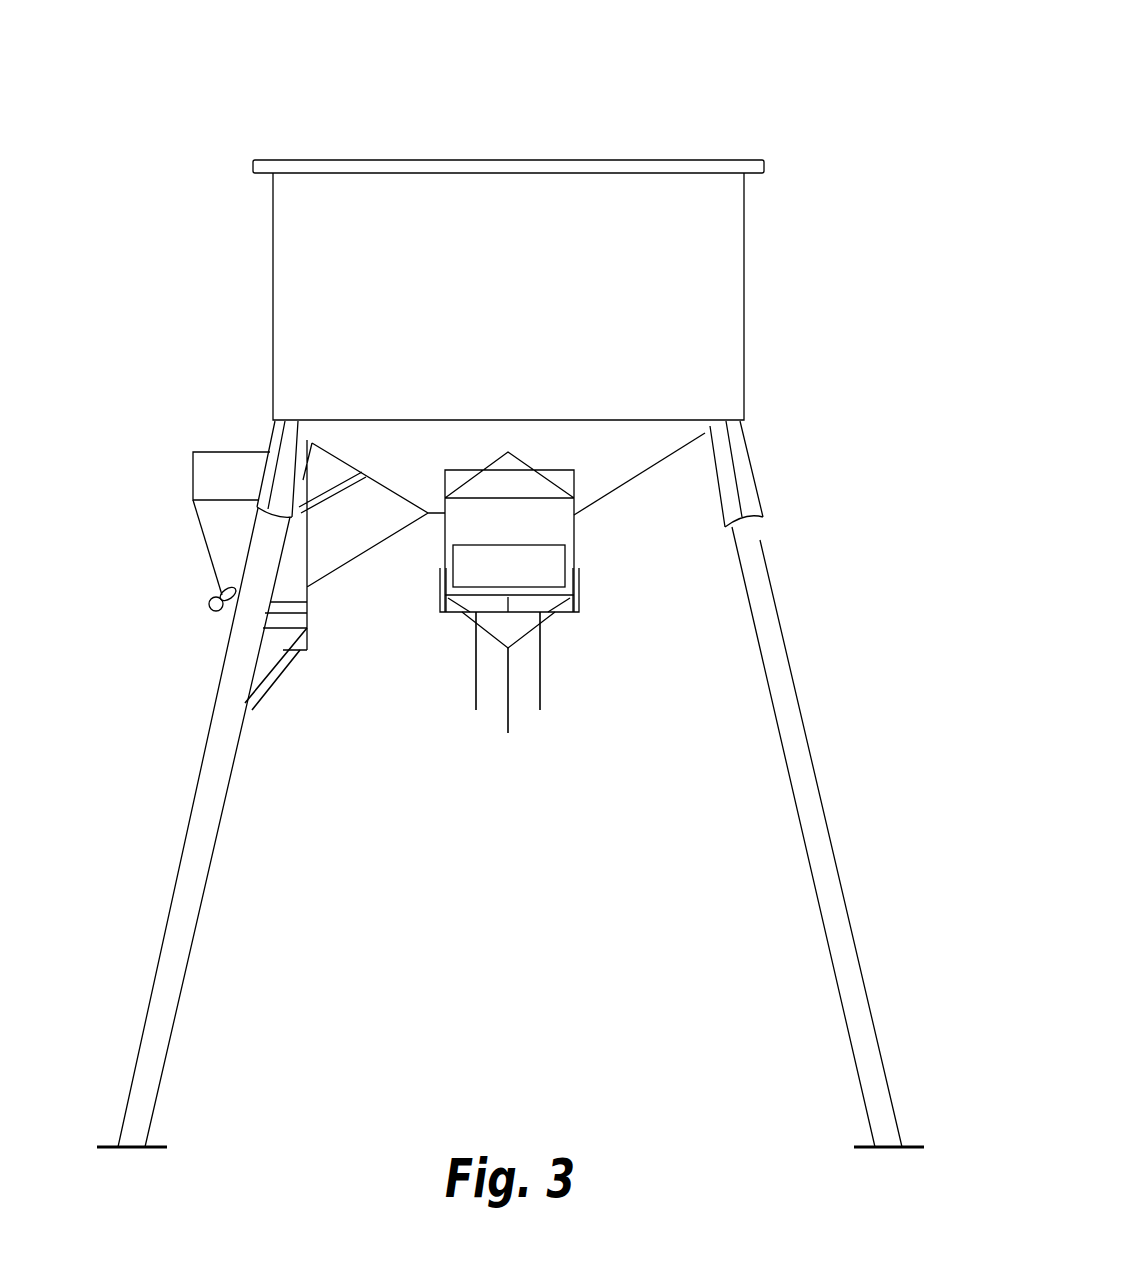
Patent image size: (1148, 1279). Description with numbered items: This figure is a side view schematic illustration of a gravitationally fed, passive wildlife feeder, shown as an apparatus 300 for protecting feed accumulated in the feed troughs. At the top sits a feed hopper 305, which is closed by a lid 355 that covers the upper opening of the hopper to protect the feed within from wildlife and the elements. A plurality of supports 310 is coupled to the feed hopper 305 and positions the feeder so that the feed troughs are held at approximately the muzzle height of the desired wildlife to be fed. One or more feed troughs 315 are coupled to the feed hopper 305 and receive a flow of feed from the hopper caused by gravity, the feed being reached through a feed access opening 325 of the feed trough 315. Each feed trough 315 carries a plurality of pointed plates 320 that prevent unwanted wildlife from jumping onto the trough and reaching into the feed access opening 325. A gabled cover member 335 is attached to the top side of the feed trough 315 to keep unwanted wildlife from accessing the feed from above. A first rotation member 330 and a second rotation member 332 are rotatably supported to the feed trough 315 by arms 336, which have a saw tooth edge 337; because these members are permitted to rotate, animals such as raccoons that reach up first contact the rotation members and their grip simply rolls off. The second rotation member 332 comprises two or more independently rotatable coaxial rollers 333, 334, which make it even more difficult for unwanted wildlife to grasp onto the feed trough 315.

The apparatus 300 is at (502, 577).
The feed hopper 305 is at (580, 296).
The supports 310 is at (507, 784).
The feed trough 315 is at (382, 541).
The pointed plates 320 is at (446, 696).
The feed access opening 325 is at (509, 566).
The first rotation member 330 is at (552, 590).
The second rotation member 332 is at (521, 652).
The coaxial roller 333 is at (418, 625).
The coaxial roller 334 is at (603, 622).
The gabled cover member 335 is at (274, 385).
The arms 336 is at (159, 633).
The saw tooth edge 337 is at (190, 587).
The lid 355 is at (483, 140).